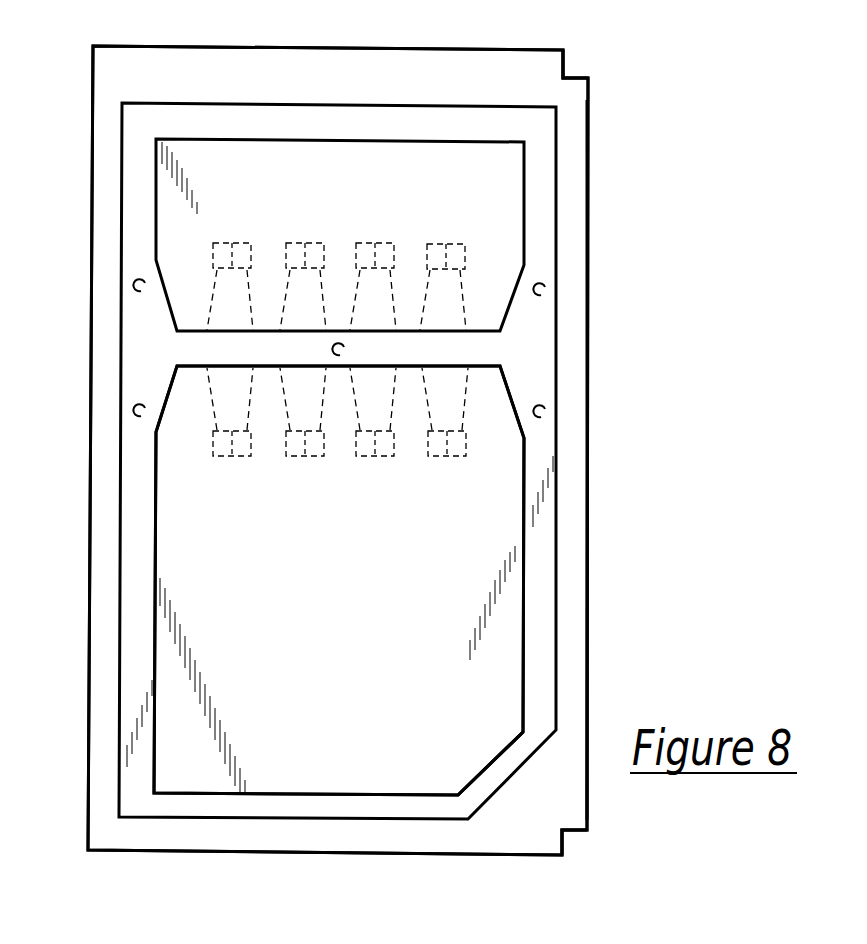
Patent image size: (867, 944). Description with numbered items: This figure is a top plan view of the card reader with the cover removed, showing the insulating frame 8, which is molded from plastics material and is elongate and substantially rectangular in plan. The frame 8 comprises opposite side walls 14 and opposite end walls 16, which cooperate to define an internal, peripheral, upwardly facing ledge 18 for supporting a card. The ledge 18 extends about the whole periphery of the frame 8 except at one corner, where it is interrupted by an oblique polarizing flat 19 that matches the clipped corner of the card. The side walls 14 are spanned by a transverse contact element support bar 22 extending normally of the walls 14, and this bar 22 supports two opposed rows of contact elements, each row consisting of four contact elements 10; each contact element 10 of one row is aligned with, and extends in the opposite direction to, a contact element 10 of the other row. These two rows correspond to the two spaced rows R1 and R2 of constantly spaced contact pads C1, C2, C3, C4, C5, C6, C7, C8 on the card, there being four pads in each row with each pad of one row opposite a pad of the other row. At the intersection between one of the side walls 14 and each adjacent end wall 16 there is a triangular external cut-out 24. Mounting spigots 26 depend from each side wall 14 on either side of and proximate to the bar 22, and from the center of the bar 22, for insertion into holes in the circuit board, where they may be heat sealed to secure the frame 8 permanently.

The insulating frame 8 is at (640, 122).
The contact element 10 is at (232, 368).
The side wall 14 is at (118, 470).
The end wall 16 is at (370, 48).
The ledge 18 is at (135, 616).
The polarizing flat 19 is at (502, 754).
The contact element support bar 22 is at (611, 460).
The external cut-out 24 is at (577, 66).
The mounting spigot 26 is at (122, 280).
The row of contact pads R1 is at (180, 218).
The row of contact pads R2 is at (200, 458).
The contact pad C1 is at (450, 243).
The contact pad C2 is at (375, 242).
The contact pad C3 is at (300, 242).
The contact pad C4 is at (222, 242).
The contact pad C5 is at (450, 460).
The contact pad C6 is at (375, 460).
The contact pad C7 is at (302, 460).
The contact pad C8 is at (230, 460).